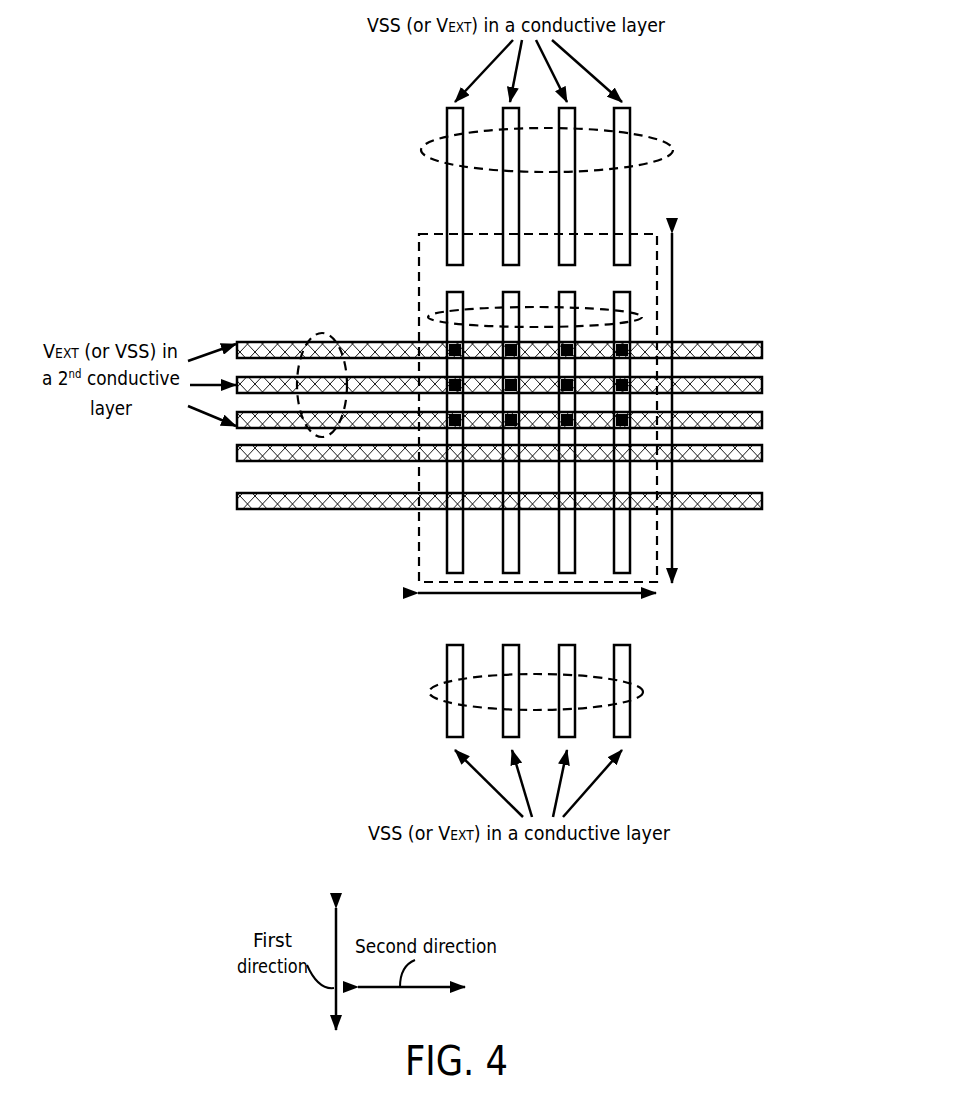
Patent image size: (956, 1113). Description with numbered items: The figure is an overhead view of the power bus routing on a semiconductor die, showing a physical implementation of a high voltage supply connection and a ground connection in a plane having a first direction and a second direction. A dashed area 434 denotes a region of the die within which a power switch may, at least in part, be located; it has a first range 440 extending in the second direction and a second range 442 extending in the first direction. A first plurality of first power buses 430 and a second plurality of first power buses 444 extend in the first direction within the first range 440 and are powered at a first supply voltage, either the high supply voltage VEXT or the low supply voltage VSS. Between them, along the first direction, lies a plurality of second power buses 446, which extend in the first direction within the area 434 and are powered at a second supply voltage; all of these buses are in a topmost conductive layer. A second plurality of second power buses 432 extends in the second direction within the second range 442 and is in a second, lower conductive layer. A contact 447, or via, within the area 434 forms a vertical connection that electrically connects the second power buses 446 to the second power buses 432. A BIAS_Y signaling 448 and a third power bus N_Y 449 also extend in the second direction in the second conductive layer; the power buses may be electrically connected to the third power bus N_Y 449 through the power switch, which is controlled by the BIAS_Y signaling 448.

The first plurality of first power buses 430 is at (420, 151).
The second plurality of second power buses 432 is at (535, 365).
The area 434 is at (418, 560).
The first range 440 is at (657, 593).
The second range 442 is at (672, 312).
The second plurality of first power buses 444 is at (428, 694).
The plurality of second power buses 446 is at (445, 315).
The contact 447 is at (445, 343).
The BIAS_Y signaling 448 is at (237, 456).
The third power bus N_Y 449 is at (237, 505).